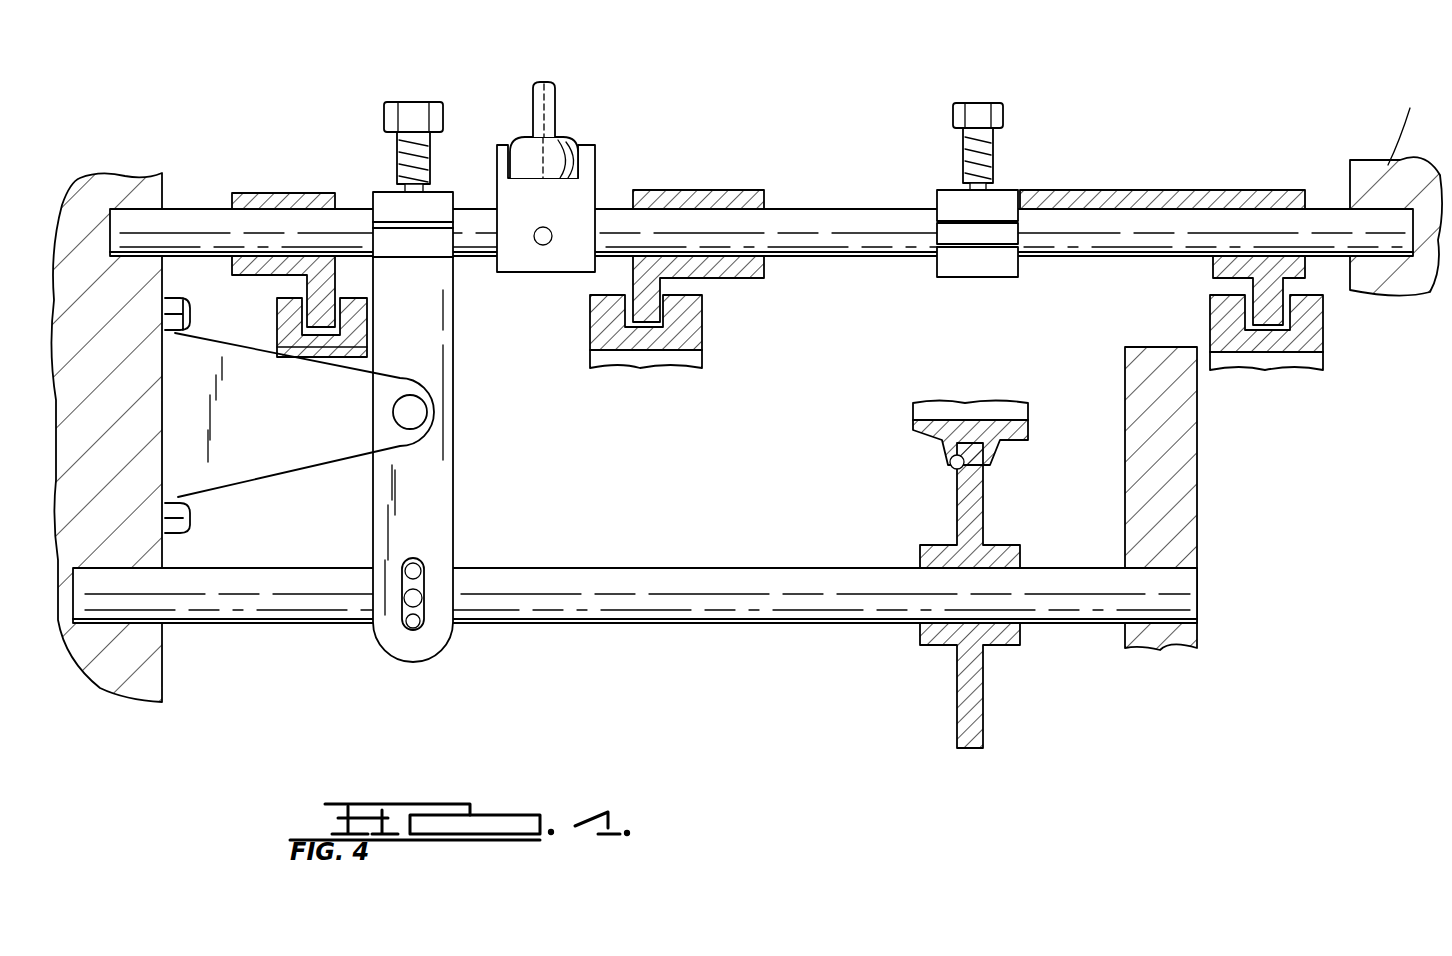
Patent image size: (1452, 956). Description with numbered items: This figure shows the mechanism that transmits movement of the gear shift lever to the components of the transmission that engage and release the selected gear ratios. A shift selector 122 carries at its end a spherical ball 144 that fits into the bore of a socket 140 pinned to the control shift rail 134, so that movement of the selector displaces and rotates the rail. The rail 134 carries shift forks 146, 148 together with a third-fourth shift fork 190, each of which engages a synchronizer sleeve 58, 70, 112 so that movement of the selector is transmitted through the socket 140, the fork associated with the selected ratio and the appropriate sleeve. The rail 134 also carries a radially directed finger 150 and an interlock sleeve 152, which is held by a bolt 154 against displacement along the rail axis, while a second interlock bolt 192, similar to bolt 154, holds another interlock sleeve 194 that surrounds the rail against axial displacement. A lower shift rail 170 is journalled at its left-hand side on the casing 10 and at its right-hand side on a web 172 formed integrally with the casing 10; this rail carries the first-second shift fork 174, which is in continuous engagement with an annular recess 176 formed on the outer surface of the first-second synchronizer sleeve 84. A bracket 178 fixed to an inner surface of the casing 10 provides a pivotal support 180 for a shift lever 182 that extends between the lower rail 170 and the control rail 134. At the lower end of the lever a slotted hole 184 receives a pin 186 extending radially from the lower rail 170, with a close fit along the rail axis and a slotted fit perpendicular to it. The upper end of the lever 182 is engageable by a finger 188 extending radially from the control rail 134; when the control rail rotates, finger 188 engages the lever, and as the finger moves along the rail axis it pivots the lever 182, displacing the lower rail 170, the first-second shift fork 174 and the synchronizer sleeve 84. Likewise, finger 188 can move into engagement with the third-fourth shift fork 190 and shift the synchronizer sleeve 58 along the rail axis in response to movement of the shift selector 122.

The casing 10 is at (112, 200).
The 3-4 synchronizer sleeve 58 is at (283, 328).
The synchronizer sleeve 70 is at (668, 314).
The 1-2 synchronizer sleeve 84 is at (1000, 440).
The synchronizer sleeve 112 is at (1300, 320).
The shift selector 122 is at (557, 98).
The shift rail 134 is at (870, 214).
The socket 140 is at (503, 155).
The spherical ball 144 is at (570, 140).
The shift fork 146 is at (732, 198).
The shift fork 148 is at (1250, 192).
The finger 150 is at (988, 228).
The interlock sleeve 152 is at (978, 268).
The bolt 154 is at (983, 108).
The lower shift rail 170 is at (783, 578).
The web 172 is at (1185, 477).
The 1-2 shift fork 174 is at (975, 508).
The annular recess 176 is at (958, 468).
The bracket 178 is at (272, 460).
The pivotal support 180 is at (420, 416).
The shift lever 182 is at (420, 405).
The slotted hole 184 is at (416, 562).
The pin 186 is at (420, 598).
The finger 188 is at (403, 238).
The 3-4 shift fork 190 is at (244, 194).
The second interlock bolt 192 is at (412, 106).
The interlock sleeve 194 is at (380, 205).